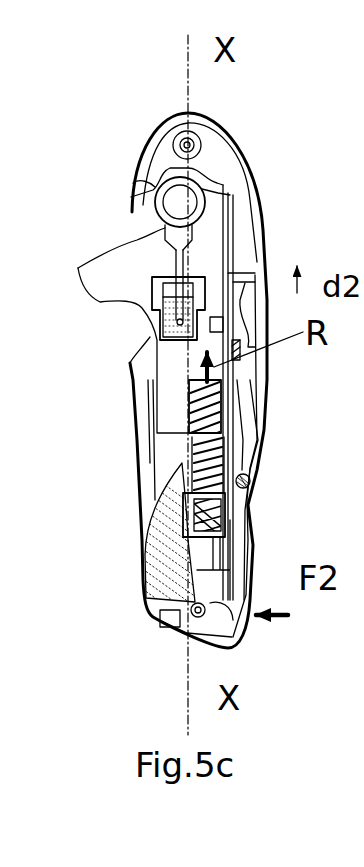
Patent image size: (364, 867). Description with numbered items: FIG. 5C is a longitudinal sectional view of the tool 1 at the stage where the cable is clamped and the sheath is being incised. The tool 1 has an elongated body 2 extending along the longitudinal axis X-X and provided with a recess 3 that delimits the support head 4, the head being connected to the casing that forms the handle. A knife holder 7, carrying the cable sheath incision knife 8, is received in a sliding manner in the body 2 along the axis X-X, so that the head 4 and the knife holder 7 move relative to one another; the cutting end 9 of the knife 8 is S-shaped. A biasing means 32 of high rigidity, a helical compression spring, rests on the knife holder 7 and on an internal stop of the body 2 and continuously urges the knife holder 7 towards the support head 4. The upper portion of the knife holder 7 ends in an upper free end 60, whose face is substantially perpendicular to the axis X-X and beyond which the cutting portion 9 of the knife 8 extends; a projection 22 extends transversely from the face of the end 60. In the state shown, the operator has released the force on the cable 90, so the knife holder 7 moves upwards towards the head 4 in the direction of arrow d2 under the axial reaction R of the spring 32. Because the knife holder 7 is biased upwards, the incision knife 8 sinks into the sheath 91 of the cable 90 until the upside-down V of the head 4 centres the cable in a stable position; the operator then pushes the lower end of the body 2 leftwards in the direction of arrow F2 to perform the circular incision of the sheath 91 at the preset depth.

The tool 1 is at (258, 117).
The elongated body 2 is at (86, 418).
The recess 3 is at (123, 322).
The support head 4 is at (178, 124).
The knife holder 7 is at (178, 350).
The cable sheath incision knife 8 is at (188, 256).
The cutting end 9 is at (165, 228).
The projection 22 is at (78, 268).
The biasing means 32 is at (185, 452).
The upper free end 60 is at (200, 226).
The cable 90 is at (153, 210).
The sheath 91 is at (199, 195).